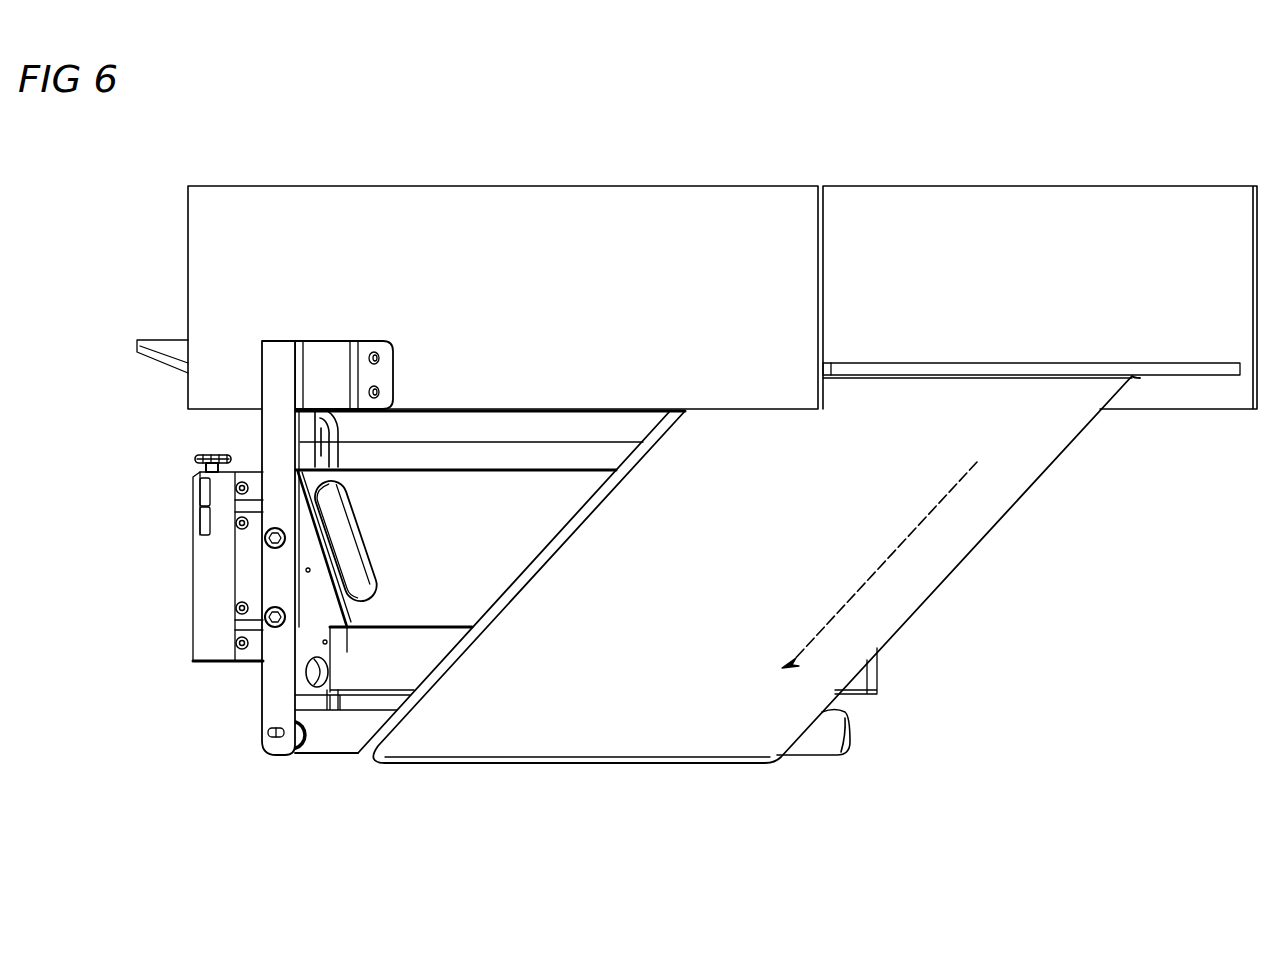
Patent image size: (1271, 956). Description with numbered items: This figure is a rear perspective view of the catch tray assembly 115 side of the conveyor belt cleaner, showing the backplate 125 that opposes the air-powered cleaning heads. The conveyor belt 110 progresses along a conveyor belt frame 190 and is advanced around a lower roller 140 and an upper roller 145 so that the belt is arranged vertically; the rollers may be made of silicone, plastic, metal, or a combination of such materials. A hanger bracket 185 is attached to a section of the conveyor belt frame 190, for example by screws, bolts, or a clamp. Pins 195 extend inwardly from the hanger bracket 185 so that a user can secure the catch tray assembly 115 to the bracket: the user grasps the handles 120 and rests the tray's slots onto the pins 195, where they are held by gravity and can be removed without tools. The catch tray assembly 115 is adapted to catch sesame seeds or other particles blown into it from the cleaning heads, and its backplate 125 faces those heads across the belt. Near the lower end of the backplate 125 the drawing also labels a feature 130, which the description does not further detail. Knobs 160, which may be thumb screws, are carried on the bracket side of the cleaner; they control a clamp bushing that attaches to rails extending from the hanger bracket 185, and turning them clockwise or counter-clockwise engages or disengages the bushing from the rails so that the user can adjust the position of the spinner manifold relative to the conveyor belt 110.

The conveyor belt 110 is at (731, 582).
The catch tray assembly 115 is at (575, 421).
The handles 120 is at (356, 497).
The backplate 125 is at (415, 551).
The hole 130 is at (318, 673).
The lower roller 140 is at (318, 757).
The upper roller 145 is at (350, 451).
The knobs 160 is at (195, 460).
The hanger bracket 185 is at (262, 343).
The conveyor belt frame 190 is at (697, 297).
The pins 195 is at (264, 615).